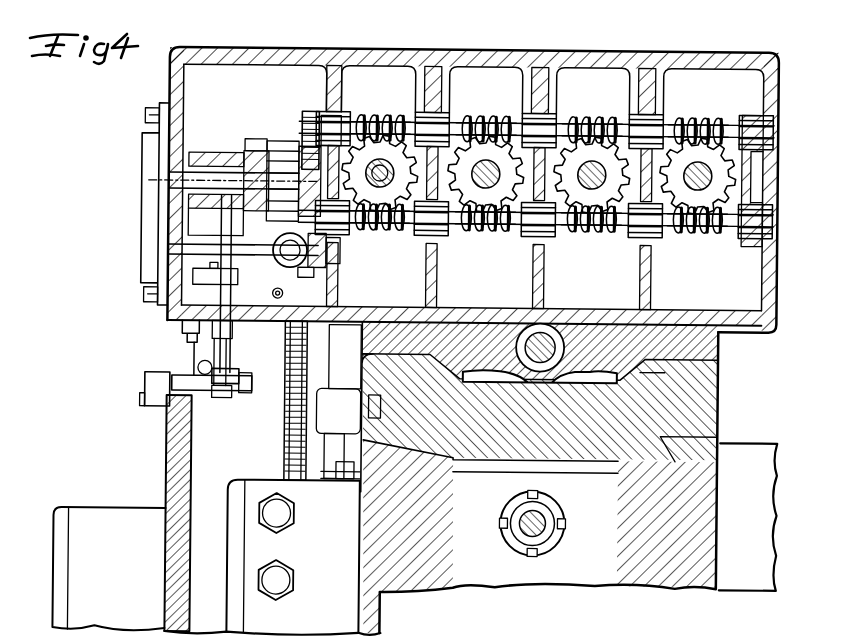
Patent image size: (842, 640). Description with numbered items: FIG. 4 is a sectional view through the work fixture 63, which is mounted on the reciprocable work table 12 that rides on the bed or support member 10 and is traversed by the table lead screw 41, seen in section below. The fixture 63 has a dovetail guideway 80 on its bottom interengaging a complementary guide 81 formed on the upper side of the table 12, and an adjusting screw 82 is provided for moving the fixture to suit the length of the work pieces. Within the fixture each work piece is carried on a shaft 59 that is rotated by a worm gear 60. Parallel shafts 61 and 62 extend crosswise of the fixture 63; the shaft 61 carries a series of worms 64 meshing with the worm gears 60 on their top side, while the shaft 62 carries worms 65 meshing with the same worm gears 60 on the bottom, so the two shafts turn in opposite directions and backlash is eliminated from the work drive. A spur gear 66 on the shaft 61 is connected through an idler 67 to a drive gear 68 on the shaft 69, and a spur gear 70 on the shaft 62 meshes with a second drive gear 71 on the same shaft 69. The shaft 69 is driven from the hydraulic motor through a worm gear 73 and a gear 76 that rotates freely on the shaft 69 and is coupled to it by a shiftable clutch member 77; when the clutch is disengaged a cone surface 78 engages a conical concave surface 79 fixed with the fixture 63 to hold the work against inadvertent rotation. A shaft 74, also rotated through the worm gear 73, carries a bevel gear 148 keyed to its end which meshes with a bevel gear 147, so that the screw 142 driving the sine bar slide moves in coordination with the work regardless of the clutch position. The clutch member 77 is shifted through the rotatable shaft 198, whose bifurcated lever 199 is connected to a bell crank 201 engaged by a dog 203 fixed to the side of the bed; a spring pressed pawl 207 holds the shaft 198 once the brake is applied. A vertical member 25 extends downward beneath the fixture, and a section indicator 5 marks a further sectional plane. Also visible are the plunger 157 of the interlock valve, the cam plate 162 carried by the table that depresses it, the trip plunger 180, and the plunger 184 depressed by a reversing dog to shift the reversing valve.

The section line 5- 5 is at (228, 20).
The bed or support member 10 is at (173, 452).
The reciprocable work support or table 12 is at (557, 463).
The vertical drive shaft 25 is at (240, 322).
The table lead screw 41 is at (565, 507).
The shaft 59 is at (384, 165).
The worm gear 60 is at (393, 203).
The shaft 61 is at (368, 98).
The shaft 62 is at (328, 262).
The fixture 63 is at (636, 56).
The worms 64 is at (395, 110).
The worms 65 is at (370, 230).
The spur gear 66 is at (312, 110).
The idler 67 is at (302, 145).
The drive gear 68 is at (275, 140).
The shaft 69 is at (170, 181).
The spur gear 70 is at (300, 265).
The second drive gear 71 is at (275, 165).
The worm gear 73 is at (292, 288).
The shaft 74 is at (170, 247).
The gear 76 is at (255, 150).
The shiftable clutch member 77 is at (258, 138).
The cone surface 78 is at (215, 150).
The conical-shaped concave surface 79 is at (202, 150).
The dovetail guideway 80 is at (633, 374).
The complementary guide 81 is at (660, 373).
The adjusting screw 82 is at (543, 336).
The screw 142 is at (290, 431).
The bevel gear 147 is at (305, 276).
The bevel gear 148 is at (330, 262).
The plunger 157 is at (348, 477).
The cam plate 162 is at (320, 462).
The trip plunger 180 is at (338, 477).
The plunger 184 is at (330, 453).
The rotatable shaft 198 is at (212, 345).
The bifurcated lever 199 is at (264, 380).
The bell crank 201 is at (235, 397).
The dog 203 is at (164, 360).
The spring pressed pawl 207 is at (195, 275).